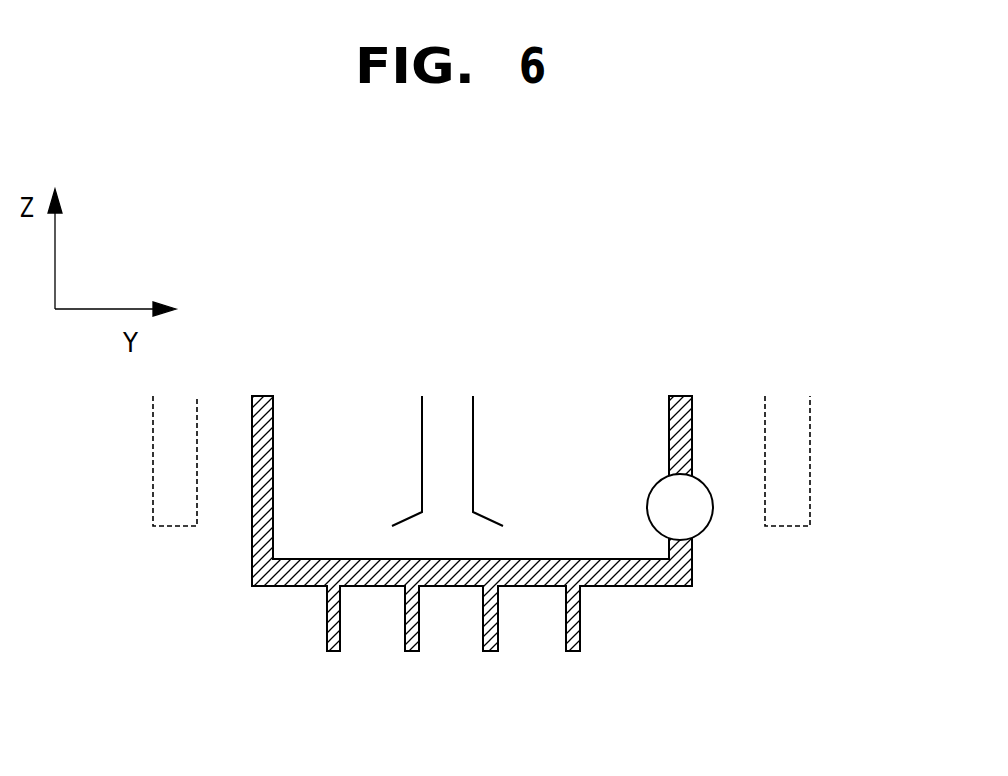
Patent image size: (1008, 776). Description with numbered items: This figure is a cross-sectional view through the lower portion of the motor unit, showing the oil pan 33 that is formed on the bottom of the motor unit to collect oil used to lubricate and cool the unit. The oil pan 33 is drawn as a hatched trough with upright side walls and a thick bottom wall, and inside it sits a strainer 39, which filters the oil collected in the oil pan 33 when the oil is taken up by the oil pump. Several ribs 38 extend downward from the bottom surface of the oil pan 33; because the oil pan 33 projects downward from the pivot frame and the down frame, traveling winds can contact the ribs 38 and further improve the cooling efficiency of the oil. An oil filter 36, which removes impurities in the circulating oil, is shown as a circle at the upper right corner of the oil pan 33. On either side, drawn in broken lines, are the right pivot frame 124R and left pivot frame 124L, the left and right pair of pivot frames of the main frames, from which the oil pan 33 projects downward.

The oil pan 33 is at (297, 588).
The oil filter 36 is at (712, 520).
The rib 38 is at (580, 615).
The strainer 39 is at (473, 413).
The right pivot frame 124R is at (153, 505).
The left pivot frame 124L is at (810, 497).